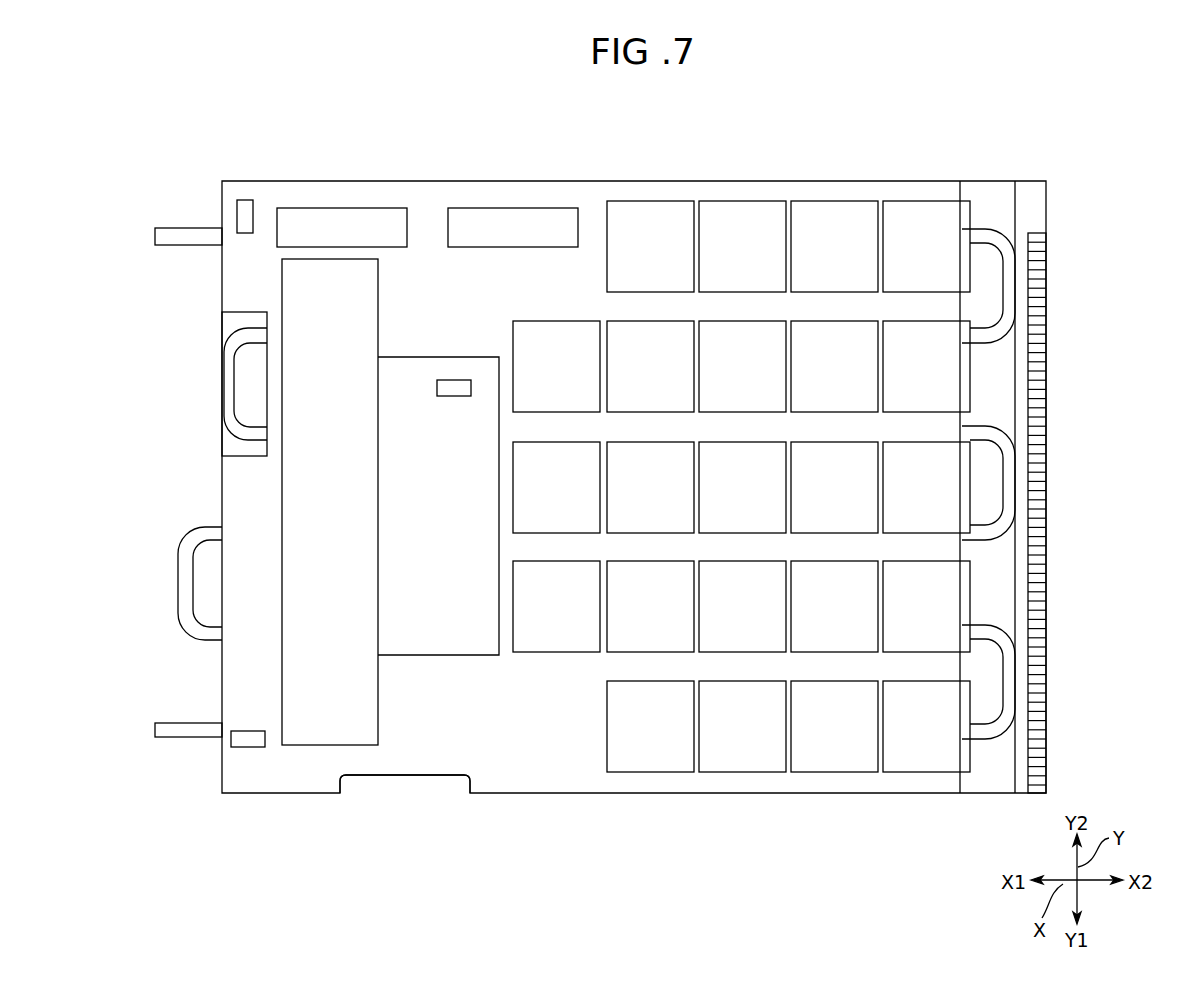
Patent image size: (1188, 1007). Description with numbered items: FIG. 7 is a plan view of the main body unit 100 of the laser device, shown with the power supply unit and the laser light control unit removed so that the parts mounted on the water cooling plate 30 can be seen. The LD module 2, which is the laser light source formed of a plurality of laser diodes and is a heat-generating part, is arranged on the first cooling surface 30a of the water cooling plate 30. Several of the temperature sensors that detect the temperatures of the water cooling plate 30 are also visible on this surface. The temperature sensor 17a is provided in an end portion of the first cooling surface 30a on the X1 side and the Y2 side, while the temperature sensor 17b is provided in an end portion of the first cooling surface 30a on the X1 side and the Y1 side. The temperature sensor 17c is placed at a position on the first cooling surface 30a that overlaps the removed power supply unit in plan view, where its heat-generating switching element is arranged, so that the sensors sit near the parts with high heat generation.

The main body unit 100 is at (666, 473).
The LD module 2 is at (868, 180).
The water cooling plate 30 is at (406, 553).
The first cooling surface 30a is at (427, 746).
The temperature sensor 17a is at (244, 200).
The temperature sensor 17b is at (247, 747).
The temperature sensor 17c is at (450, 380).